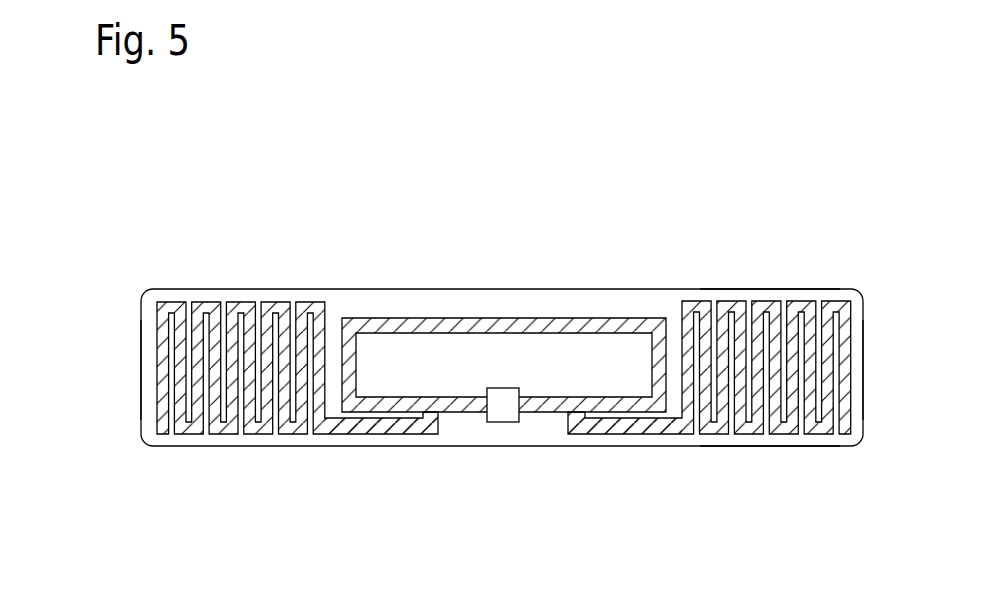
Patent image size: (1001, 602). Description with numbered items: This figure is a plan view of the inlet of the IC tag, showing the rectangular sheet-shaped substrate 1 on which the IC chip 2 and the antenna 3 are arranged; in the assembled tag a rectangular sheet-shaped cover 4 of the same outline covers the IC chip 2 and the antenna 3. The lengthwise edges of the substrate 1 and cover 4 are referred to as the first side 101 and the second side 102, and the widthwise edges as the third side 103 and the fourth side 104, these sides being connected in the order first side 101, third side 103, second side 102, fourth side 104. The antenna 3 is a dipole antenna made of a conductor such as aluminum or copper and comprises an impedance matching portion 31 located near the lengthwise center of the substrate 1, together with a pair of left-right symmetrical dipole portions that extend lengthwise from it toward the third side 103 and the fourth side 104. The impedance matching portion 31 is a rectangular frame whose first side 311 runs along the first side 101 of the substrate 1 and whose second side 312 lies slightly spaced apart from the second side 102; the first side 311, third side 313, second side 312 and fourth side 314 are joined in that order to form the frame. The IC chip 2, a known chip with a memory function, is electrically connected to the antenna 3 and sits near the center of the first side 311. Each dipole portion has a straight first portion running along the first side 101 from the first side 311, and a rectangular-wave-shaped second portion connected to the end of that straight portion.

The cover 4 is at (476, 396).
The substrate 1 is at (190, 452).
The IC chip 2 is at (507, 410).
The antenna 3 is at (492, 371).
The impedance matching portion 31 is at (526, 368).
The first side of impedance matching portion 311 is at (563, 414).
The second side of impedance matching portion 312 is at (542, 316).
The third side of impedance matching portion 313 is at (352, 363).
The fourth side of impedance matching portion 314 is at (653, 363).
The first side 101 is at (773, 447).
The second side 102 is at (771, 289).
The third side 103 is at (140, 366).
The fourth side 104 is at (863, 380).